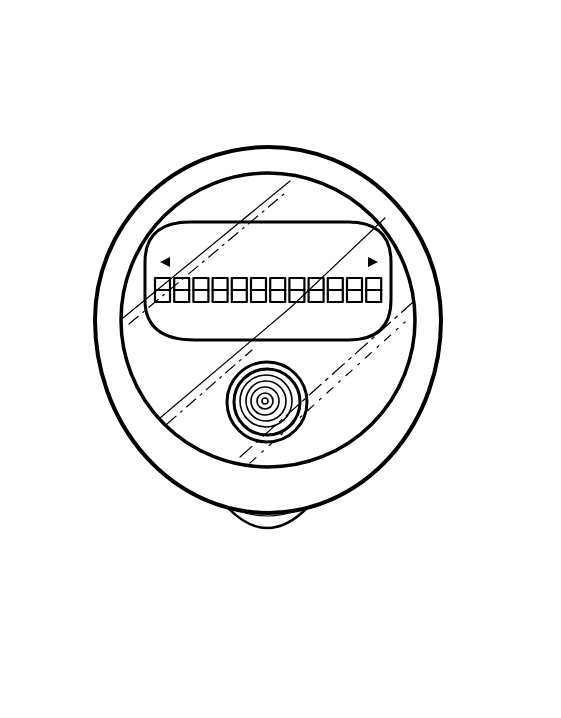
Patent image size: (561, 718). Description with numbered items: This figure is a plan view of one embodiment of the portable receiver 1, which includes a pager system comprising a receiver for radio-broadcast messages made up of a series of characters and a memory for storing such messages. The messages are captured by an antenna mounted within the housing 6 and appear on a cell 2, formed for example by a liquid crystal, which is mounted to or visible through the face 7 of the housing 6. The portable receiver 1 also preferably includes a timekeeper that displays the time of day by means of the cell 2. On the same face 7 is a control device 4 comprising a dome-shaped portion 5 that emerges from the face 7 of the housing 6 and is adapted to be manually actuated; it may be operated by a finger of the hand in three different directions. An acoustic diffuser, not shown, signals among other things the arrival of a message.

The portable receiver 1 is at (126, 119).
The cell 2 is at (350, 255).
The control device 4 is at (328, 419).
The dome-shaped portion 5 is at (250, 418).
The housing 6 is at (442, 300).
The face 7 is at (153, 357).